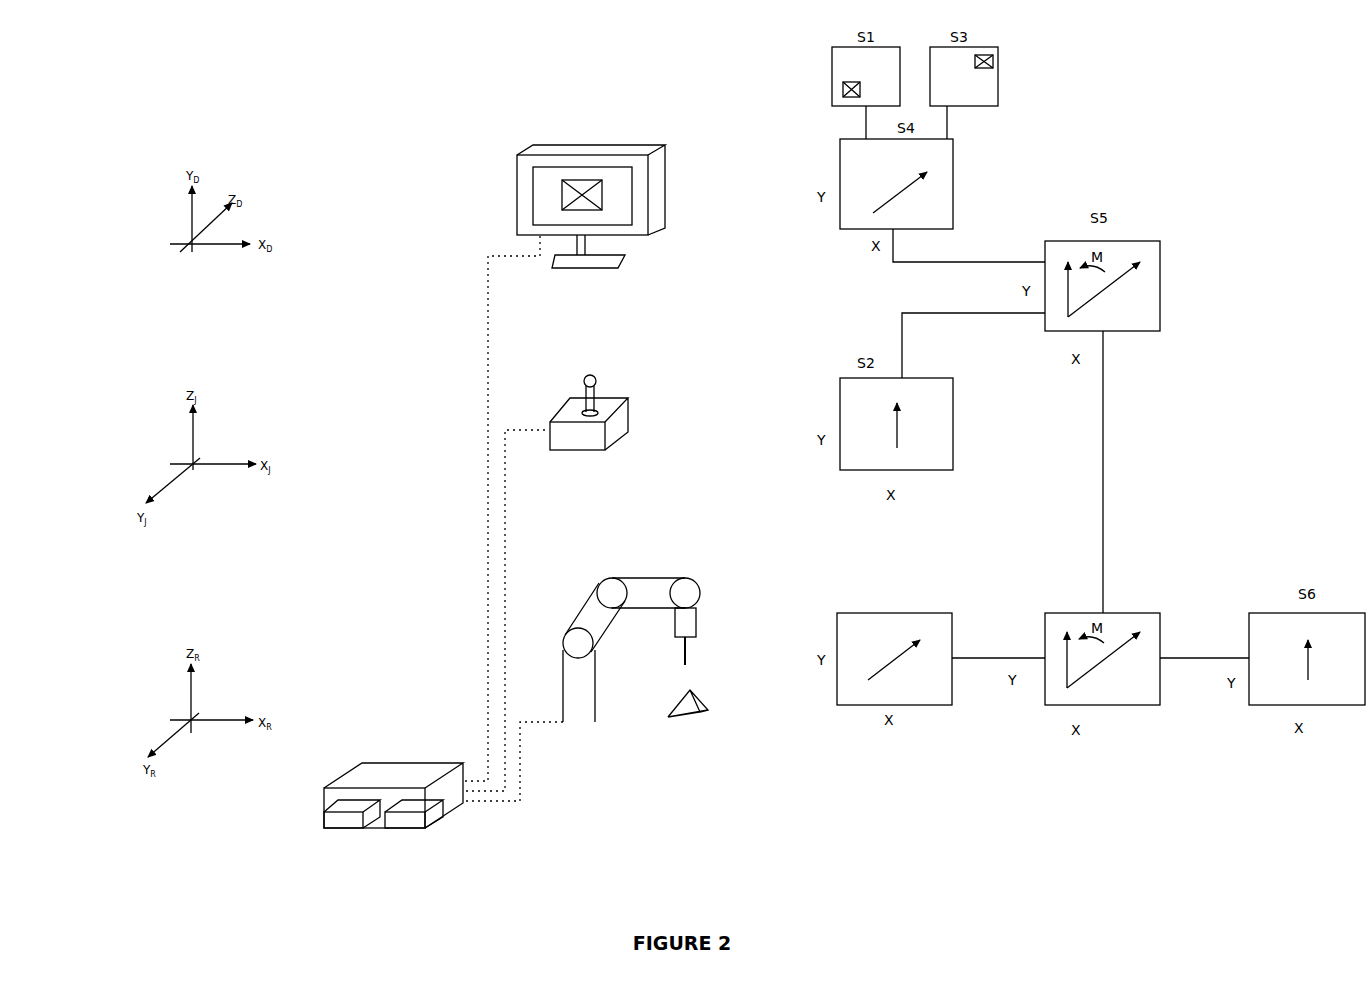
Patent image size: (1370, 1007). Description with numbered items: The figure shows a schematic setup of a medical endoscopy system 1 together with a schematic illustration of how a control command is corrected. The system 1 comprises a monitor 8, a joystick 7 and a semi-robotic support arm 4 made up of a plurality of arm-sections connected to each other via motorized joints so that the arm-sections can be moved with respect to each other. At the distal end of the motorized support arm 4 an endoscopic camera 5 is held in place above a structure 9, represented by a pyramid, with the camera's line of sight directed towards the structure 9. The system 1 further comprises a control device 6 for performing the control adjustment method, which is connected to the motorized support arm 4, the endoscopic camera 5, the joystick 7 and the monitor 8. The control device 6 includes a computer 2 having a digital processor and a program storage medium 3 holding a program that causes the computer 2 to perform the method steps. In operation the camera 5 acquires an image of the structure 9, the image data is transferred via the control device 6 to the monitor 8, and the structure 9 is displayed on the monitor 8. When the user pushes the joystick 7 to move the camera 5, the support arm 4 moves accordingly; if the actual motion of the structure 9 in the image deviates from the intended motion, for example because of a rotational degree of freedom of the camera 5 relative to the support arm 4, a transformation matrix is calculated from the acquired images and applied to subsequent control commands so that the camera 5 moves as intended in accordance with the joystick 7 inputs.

The medical endoscopy system 1 is at (730, 94).
The computer 2 is at (358, 828).
The program storage medium 3 is at (401, 828).
The semi-robotic support arm 4 is at (584, 610).
The endoscopic camera 5 is at (689, 650).
The control device 6 is at (370, 763).
The joystick 7 is at (618, 426).
The monitor 8 is at (658, 189).
The structure 9 is at (585, 180).